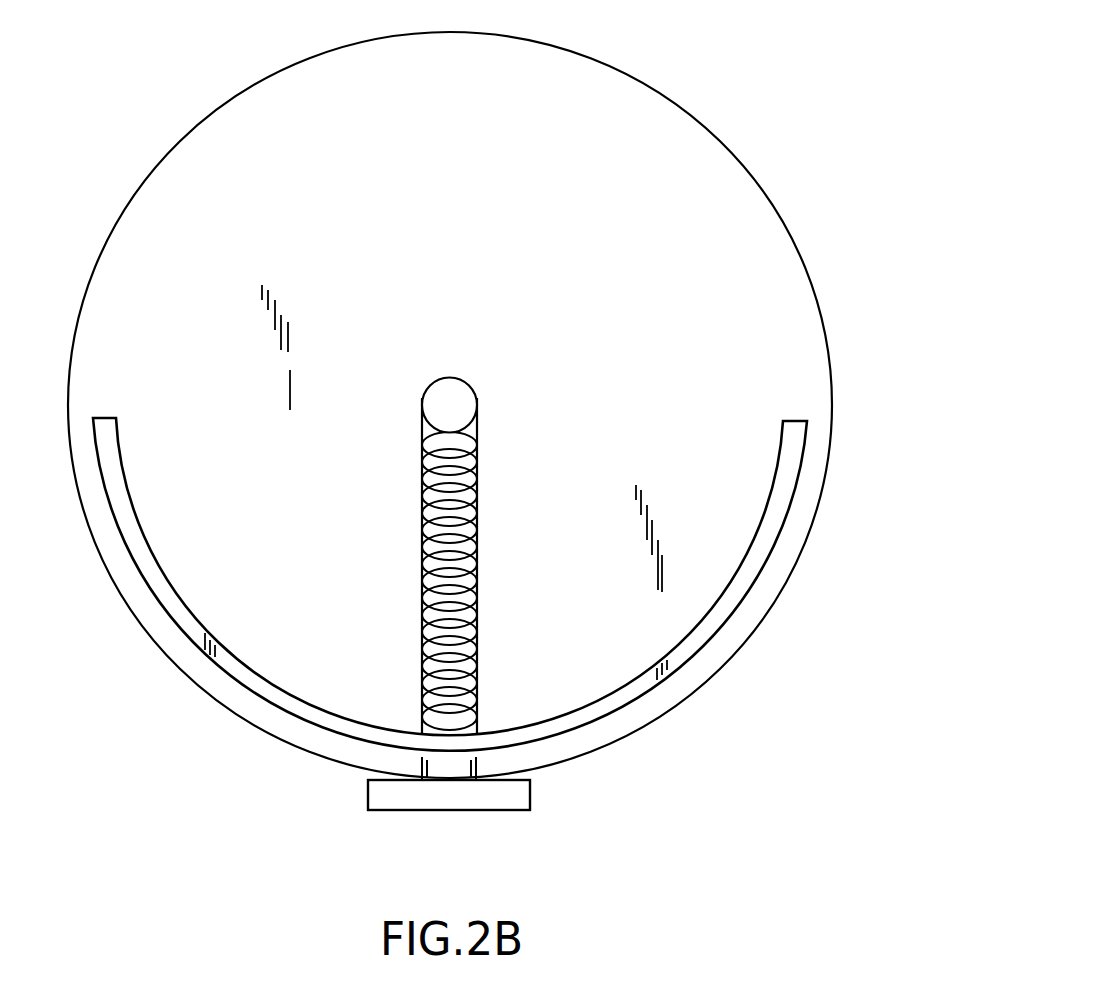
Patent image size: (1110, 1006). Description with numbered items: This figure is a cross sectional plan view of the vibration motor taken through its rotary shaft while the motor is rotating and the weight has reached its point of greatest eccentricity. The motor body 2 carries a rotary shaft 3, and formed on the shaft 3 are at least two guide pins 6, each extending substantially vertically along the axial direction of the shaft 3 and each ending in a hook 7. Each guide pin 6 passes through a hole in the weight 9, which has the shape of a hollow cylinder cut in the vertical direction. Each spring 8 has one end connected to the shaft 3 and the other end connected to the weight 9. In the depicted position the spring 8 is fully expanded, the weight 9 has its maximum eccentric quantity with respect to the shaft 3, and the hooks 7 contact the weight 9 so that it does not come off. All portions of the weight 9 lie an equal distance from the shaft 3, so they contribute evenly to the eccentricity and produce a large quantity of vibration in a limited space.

The motor body 2 is at (657, 90).
The rotary shaft 3 is at (477, 403).
The guide pin 6 is at (477, 505).
The hook 7 is at (512, 810).
The spring 8 is at (422, 543).
The weight 9 is at (807, 437).